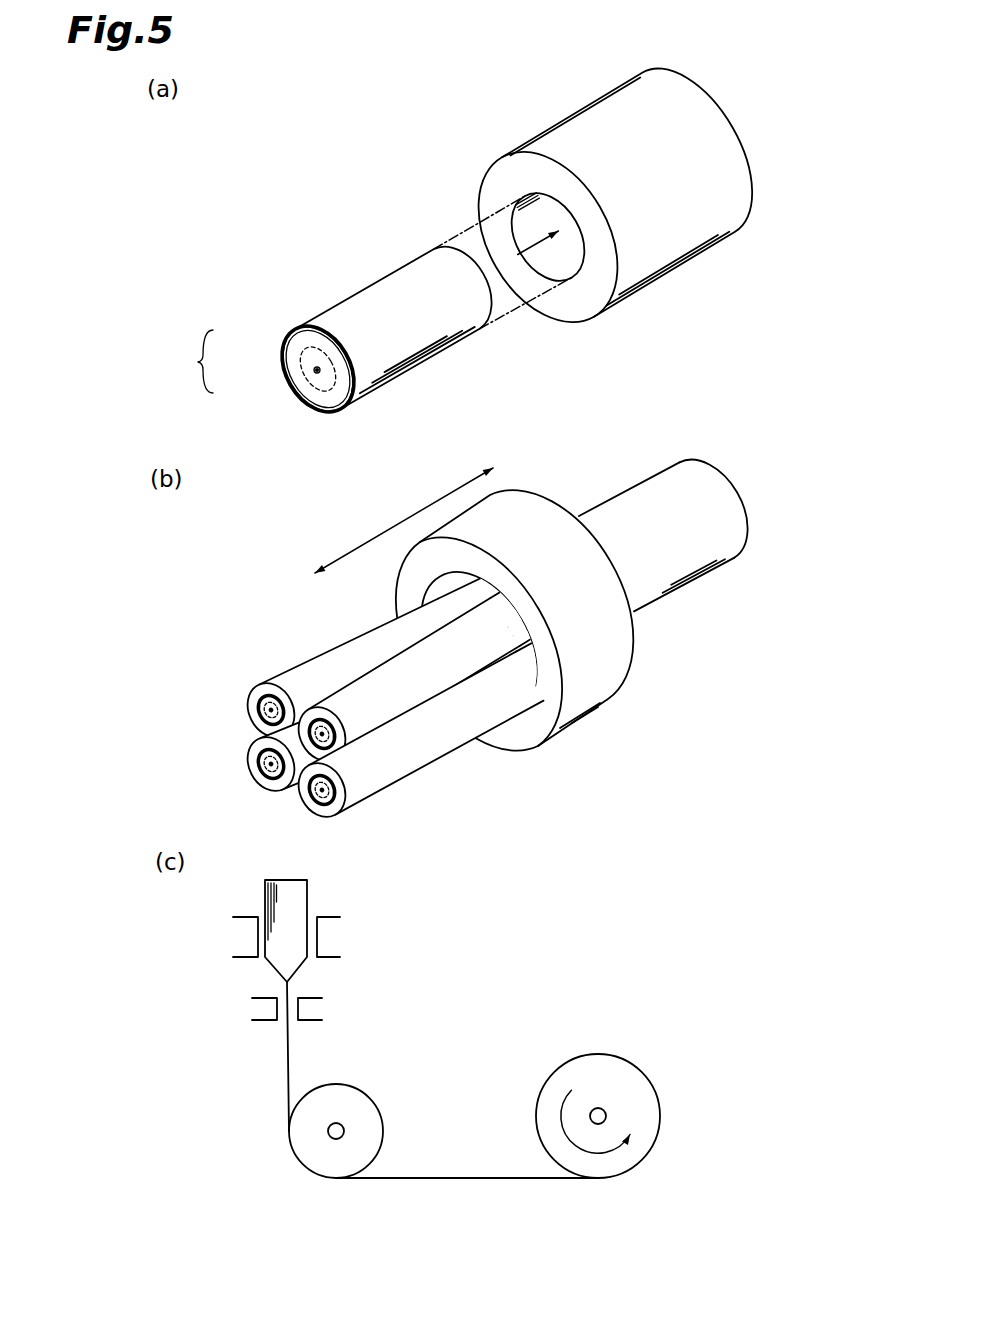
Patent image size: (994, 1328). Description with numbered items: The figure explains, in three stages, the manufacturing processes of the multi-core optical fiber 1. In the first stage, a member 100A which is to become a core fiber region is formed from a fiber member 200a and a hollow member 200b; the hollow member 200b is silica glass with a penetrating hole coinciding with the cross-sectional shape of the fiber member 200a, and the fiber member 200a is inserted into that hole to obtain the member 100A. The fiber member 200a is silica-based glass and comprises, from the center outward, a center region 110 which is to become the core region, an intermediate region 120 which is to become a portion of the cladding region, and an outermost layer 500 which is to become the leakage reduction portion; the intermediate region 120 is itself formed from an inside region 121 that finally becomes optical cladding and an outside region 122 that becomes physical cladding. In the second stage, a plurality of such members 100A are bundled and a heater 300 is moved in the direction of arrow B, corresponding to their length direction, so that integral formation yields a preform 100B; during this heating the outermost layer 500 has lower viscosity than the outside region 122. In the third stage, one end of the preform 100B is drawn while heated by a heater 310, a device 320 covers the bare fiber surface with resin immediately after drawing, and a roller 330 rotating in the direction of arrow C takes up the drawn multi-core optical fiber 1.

The member which is to become core fiber region 100A is at (462, 446).
The preform 100B is at (697, 622).
The center region 110 is at (312, 372).
The intermediate region 120 is at (186, 361).
The inside region 121 is at (296, 371).
The outside region 122 is at (299, 349).
The outermost layer 500 is at (291, 331).
The fiber member 200a is at (352, 287).
The hollow member 200b is at (578, 126).
The heater 300 is at (535, 515).
The heater 310 is at (321, 916).
The device 320 is at (306, 997).
The roller 330 is at (622, 1056).
The multi-core optical fiber 1 is at (458, 1181).
The arrow B is at (390, 527).
The arrow C is at (557, 1120).